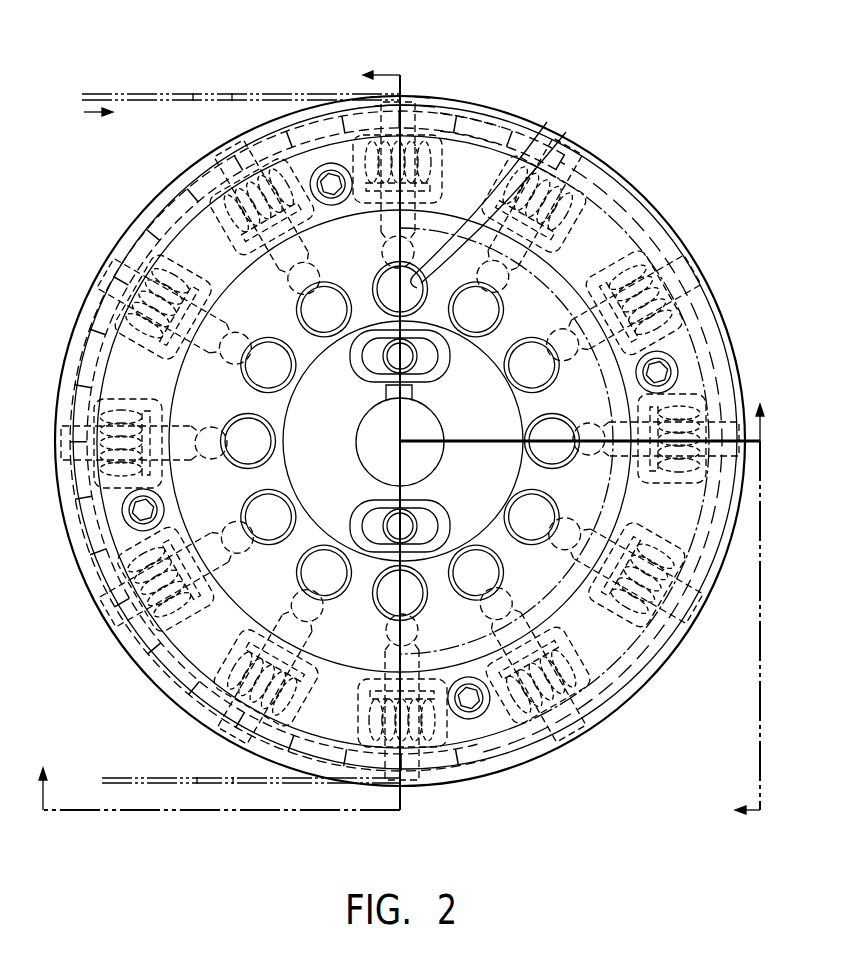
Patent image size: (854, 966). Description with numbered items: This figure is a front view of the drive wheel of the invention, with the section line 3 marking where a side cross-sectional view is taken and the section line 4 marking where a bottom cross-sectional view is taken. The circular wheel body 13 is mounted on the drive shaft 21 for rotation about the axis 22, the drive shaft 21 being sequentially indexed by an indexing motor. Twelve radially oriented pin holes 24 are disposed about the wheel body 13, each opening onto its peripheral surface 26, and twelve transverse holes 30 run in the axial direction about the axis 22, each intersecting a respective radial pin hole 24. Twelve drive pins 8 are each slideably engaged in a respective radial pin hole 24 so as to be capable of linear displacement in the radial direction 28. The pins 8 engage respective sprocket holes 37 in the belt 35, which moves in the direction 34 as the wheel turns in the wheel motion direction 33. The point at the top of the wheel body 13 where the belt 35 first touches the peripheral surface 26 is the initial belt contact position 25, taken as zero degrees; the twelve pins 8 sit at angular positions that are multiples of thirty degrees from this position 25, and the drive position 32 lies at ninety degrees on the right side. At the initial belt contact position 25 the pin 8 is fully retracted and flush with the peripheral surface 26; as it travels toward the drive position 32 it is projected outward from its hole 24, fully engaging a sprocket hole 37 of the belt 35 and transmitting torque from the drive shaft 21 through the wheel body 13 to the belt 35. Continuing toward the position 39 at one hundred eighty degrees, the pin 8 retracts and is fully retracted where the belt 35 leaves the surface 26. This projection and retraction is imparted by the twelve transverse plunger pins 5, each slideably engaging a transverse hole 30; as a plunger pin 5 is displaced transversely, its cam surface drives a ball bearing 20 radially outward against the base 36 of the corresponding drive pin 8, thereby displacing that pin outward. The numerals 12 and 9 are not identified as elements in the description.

The clutch assembly 12 is at (659, 35).
The wheel body 13 is at (638, 205).
The peripheral surface 26 is at (92, 306).
The ball bearing 20 is at (522, 115).
The drive pin 8 is at (427, 102).
The radial pin hole 24 is at (449, 101).
The friction facing 9 is at (473, 104).
The base 36 is at (496, 108).
The transverse hole 30 is at (486, 196).
The transverse plunger pin 5 is at (501, 200).
The initial belt contact position 25 is at (410, 90).
The radial direction 28 is at (605, 87).
The wheel motion direction 33 is at (125, 195).
The axis 22 is at (386, 441).
The drive shaft 21 is at (378, 470).
The section line 3-3' 3 is at (554, 444).
The section line 4-4' 4 is at (400, 595).
The drive position 32 is at (777, 418).
The position at 180 degrees 39 is at (420, 801).
The belt 35 is at (106, 93).
The sprocket hole 37 is at (205, 94).
The belt direction 34 is at (95, 112).